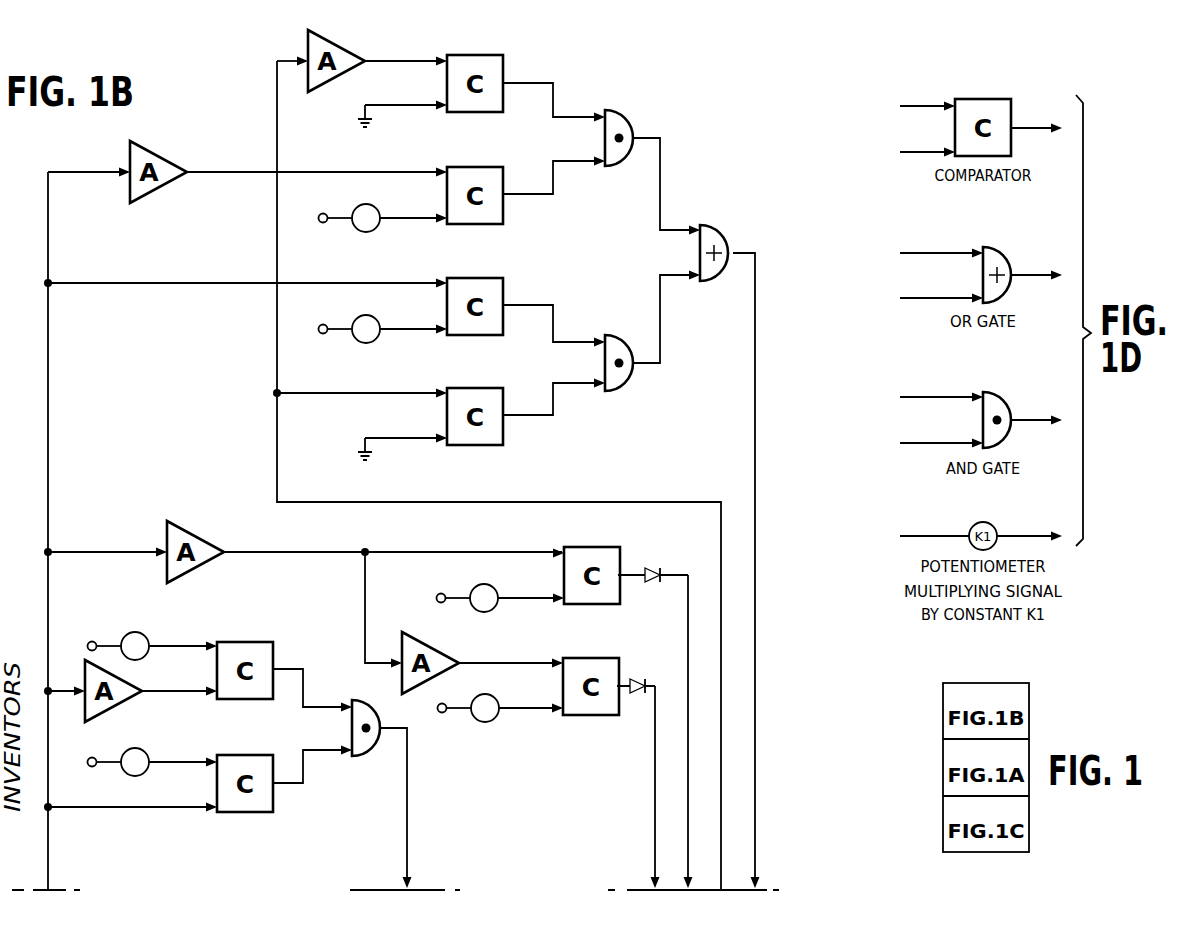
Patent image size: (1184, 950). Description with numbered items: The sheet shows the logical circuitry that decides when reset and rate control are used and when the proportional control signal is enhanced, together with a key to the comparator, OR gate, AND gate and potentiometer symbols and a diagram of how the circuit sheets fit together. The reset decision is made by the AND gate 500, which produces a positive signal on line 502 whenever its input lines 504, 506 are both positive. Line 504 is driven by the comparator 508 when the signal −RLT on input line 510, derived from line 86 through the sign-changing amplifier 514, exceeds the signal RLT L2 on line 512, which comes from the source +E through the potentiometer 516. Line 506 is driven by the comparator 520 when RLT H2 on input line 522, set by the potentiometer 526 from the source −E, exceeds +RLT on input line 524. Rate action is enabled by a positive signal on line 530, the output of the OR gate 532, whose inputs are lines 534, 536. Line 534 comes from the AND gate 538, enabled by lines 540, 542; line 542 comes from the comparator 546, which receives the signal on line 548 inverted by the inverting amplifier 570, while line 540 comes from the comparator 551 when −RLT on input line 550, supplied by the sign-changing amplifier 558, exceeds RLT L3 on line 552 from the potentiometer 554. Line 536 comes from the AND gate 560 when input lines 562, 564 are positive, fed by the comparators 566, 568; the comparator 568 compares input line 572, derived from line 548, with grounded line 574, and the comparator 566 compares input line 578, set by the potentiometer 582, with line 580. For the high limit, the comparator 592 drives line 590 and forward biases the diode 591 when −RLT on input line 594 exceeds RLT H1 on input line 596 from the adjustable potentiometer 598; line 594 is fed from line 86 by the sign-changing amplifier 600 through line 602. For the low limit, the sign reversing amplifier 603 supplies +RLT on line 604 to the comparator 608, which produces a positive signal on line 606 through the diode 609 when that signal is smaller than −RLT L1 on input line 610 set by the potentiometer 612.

The line 86 is at (48, 858).
The AND gate 500 is at (378, 750).
The line 502 is at (409, 831).
The input line 504 is at (304, 686).
The input line 506 is at (304, 786).
The comparator 508 is at (245, 642).
The input line 510 is at (176, 691).
The line 512 is at (155, 645).
The sign-changing amplifier 514 is at (128, 699).
The potentiometer 516 is at (118, 634).
The comparator 520 is at (248, 811).
The input line 522 is at (149, 764).
The input line 524 is at (80, 807).
The potentiometer 526 is at (134, 749).
The line 530 is at (758, 614).
The OR gate 532 is at (728, 232).
The line 534 is at (661, 188).
The line 536 is at (661, 331).
The AND gate 538 is at (633, 117).
The line 540 is at (553, 181).
The line 542 is at (553, 97).
The comparator 546 is at (478, 55).
The line 548 is at (692, 502).
The input line 550 is at (240, 172).
The comparator 551 is at (466, 167).
The line 552 is at (394, 218).
The potentiometer 554 is at (357, 228).
The sign-changing amplifier 558 is at (168, 161).
The AND gate 560 is at (628, 385).
The input line 562 is at (525, 305).
The input line 564 is at (553, 408).
The comparator 566 is at (468, 278).
The comparator 568 is at (468, 388).
The inverting amplifier 570 is at (352, 53).
The input line 572 is at (353, 395).
The line 574 is at (398, 440).
The input line 578 is at (394, 330).
The line 580 is at (178, 283).
The potentiometer 582 is at (366, 315).
The line 590 is at (686, 619).
The diode 591 is at (648, 566).
The comparator 592 is at (585, 547).
The input line 594 is at (408, 556).
The input line 596 is at (520, 599).
The adjustable potentiometer 598 is at (472, 585).
The sign-changing amplifier 600 is at (197, 537).
The line 602 is at (298, 550).
The sign reversing amplifier 603 is at (447, 656).
The line 604 is at (487, 665).
The line 606 is at (654, 784).
The comparator 608 is at (590, 658).
The diode 609 is at (633, 693).
The input line 610 is at (516, 709).
The potentiometer 612 is at (486, 721).